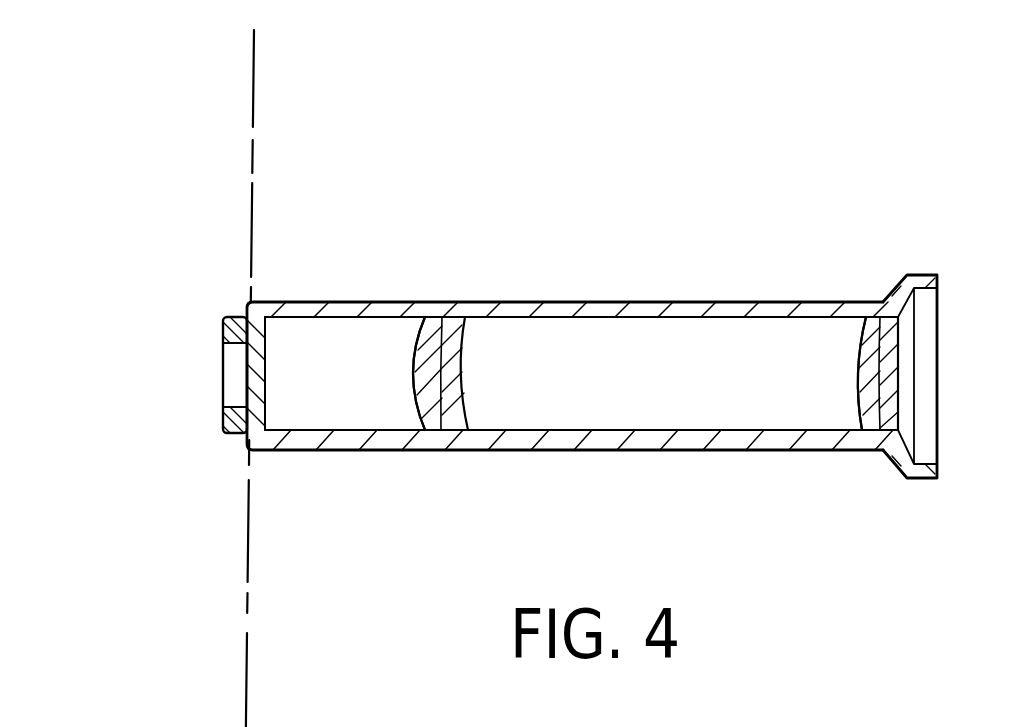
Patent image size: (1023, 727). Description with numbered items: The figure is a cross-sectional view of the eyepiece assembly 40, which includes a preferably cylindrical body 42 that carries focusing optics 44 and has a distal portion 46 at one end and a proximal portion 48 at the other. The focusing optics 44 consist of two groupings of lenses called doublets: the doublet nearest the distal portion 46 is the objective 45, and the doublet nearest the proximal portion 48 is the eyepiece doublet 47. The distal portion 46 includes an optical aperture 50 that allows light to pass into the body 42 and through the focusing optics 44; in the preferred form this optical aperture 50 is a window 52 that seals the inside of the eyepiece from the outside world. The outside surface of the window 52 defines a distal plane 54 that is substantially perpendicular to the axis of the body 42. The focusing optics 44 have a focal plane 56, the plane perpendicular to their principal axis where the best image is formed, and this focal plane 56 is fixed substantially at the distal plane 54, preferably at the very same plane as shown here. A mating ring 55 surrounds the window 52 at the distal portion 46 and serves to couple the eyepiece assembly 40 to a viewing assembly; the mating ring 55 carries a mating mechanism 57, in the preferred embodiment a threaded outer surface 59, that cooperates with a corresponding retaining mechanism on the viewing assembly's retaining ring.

The eyepiece assembly 40 is at (600, 297).
The body 42 is at (488, 302).
The focusing optics 44 is at (460, 385).
The objective 45 is at (413, 377).
The distal portion 46 is at (250, 303).
The eyepiece doublet 47 is at (865, 362).
The proximal portion 48 is at (870, 303).
The optical aperture 50 is at (223, 366).
The window 52 is at (268, 370).
The distal plane 54 is at (258, 679).
The mating ring 55 is at (223, 320).
The focal plane 56 is at (264, 91).
The mating mechanism 57 is at (236, 316).
The threaded outer surface 59 is at (238, 437).